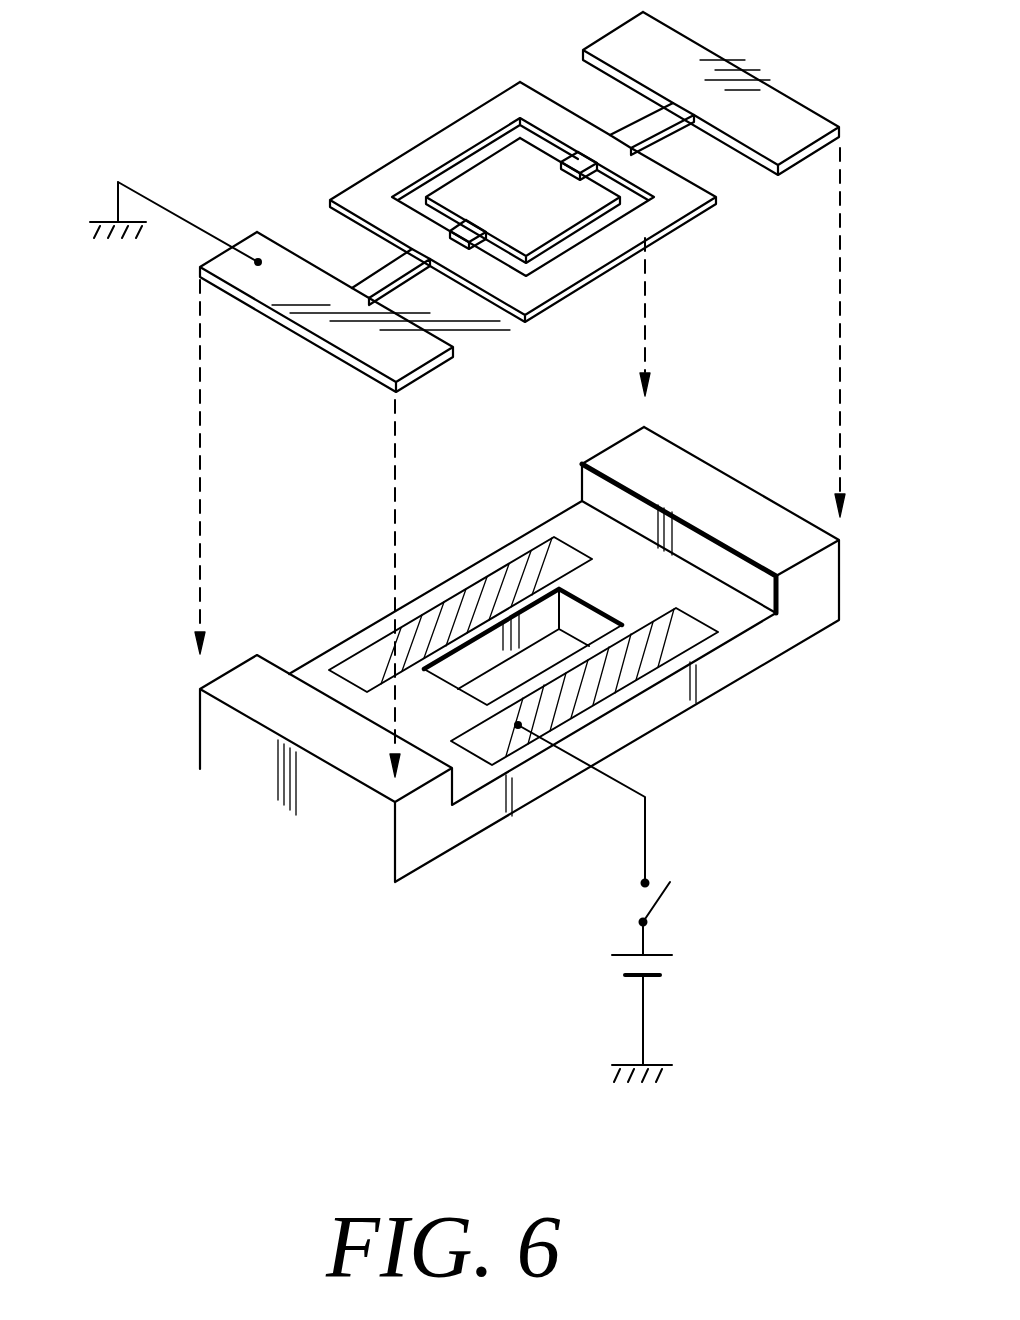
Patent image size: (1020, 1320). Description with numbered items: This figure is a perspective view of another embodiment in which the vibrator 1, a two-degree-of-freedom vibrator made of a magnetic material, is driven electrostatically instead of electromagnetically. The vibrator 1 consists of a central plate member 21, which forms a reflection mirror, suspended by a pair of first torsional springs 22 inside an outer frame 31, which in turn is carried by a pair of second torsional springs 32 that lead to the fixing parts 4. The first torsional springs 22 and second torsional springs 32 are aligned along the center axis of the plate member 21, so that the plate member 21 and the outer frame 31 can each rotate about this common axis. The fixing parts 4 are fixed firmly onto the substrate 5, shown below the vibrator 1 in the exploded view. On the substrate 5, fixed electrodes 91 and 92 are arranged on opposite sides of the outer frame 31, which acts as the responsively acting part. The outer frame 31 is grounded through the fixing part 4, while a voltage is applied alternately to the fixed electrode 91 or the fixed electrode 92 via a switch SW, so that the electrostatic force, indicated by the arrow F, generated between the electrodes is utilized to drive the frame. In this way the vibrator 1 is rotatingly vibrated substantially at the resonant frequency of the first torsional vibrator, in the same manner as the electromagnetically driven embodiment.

The vibrator 1 is at (494, 188).
The fixing part 4 is at (762, 112).
The substrate 5 is at (519, 654).
The plate member 21 is at (520, 232).
The first torsional springs 22 is at (577, 150).
The outer frame 31 is at (668, 217).
The second torsional springs 32 is at (352, 286).
The fixed electrode 91 is at (645, 670).
The fixed electrode 92 is at (452, 606).
The force F is at (631, 317).
The switch SW is at (648, 858).